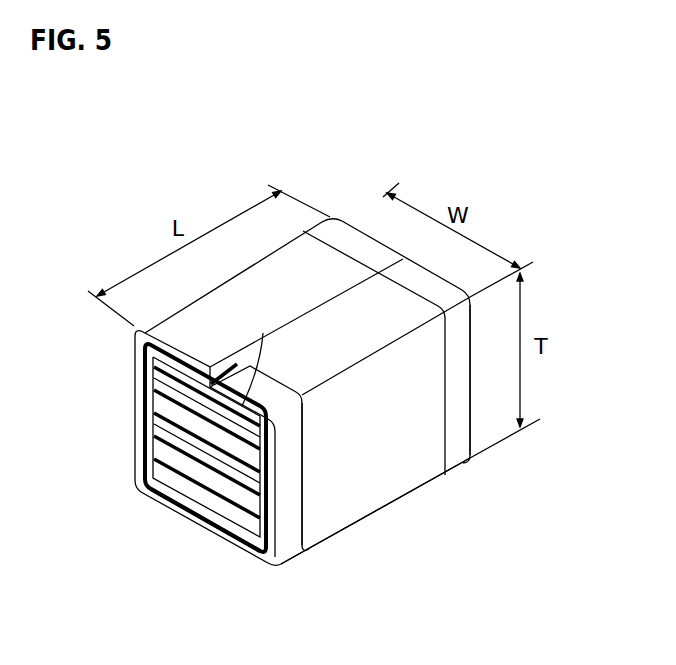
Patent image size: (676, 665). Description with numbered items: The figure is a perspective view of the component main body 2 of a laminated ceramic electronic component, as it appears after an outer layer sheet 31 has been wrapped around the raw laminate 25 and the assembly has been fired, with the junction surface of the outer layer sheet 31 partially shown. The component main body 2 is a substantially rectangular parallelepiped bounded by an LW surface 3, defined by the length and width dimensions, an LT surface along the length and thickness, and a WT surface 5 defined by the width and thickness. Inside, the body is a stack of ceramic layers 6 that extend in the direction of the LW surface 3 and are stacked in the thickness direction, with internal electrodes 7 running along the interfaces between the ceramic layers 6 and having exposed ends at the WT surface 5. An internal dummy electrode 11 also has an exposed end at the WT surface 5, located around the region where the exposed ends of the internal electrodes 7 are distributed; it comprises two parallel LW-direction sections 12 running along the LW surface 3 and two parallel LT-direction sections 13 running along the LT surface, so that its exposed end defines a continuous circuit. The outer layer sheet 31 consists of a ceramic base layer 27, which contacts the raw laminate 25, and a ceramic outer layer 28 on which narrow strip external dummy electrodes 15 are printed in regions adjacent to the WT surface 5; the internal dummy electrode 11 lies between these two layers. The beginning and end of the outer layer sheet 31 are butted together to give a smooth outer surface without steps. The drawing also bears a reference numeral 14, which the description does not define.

The component main body 2 is at (118, 174).
The LW surface 3 is at (294, 283).
The WT surface 5 is at (168, 450).
The ceramic layers 6 is at (206, 476).
The internal electrodes 7 is at (247, 490).
The internal dummy electrode 11 is at (141, 400).
The LW-direction sections 12 is at (182, 360).
The LT-direction sections 13 is at (143, 415).
The side surface of ceramic body 14 is at (388, 477).
The external dummy electrodes 15 is at (458, 452).
The raw laminate 25 is at (152, 377).
The ceramic base layer 27 is at (150, 472).
The ceramic outer layer 28 is at (156, 500).
The outer layer sheet 31 is at (384, 517).